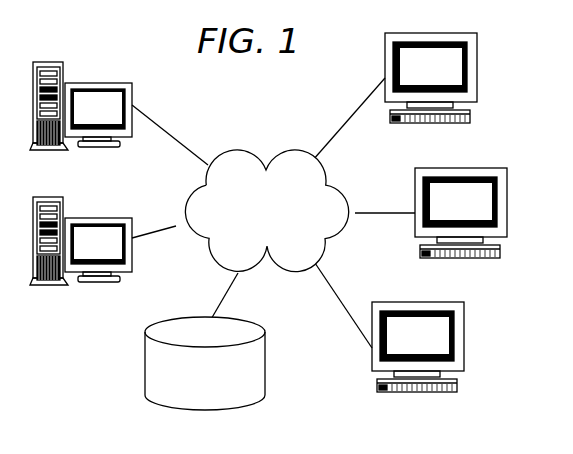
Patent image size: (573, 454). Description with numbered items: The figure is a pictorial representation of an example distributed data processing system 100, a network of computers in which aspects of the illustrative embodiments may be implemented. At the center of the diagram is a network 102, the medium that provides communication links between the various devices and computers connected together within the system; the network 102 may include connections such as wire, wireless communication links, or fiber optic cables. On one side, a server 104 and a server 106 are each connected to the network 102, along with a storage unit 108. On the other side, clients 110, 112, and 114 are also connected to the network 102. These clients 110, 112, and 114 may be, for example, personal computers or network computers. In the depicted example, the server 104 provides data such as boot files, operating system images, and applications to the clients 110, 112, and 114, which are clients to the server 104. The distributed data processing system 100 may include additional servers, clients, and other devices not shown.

The distributed data processing system 100 is at (108, 342).
The network 102 is at (237, 152).
The server 104 is at (99, 85).
The server 106 is at (99, 220).
The storage unit 108 is at (265, 355).
The client 110 is at (477, 72).
The client 112 is at (507, 207).
The client 114 is at (462, 340).